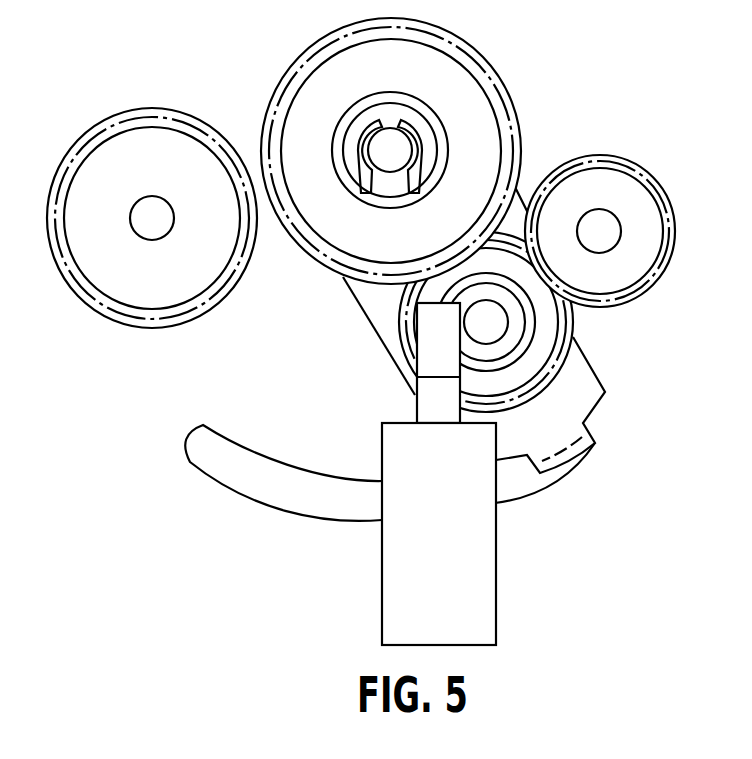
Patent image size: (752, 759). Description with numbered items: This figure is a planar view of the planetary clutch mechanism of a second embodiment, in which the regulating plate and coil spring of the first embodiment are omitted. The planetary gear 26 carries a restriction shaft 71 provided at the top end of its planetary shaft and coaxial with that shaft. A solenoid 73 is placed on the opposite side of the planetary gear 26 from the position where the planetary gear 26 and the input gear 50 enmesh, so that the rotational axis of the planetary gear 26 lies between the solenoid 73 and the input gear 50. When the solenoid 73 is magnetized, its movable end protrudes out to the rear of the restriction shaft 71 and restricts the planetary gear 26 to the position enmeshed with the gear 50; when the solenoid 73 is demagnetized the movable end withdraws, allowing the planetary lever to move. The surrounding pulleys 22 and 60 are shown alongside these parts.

The drive pulley 22 is at (435, 73).
The planetary gear 26 is at (545, 363).
The input gear 50 is at (628, 197).
The driven pulley 60 is at (125, 157).
The restriction shaft 71 is at (498, 320).
The solenoid 73 is at (480, 570).